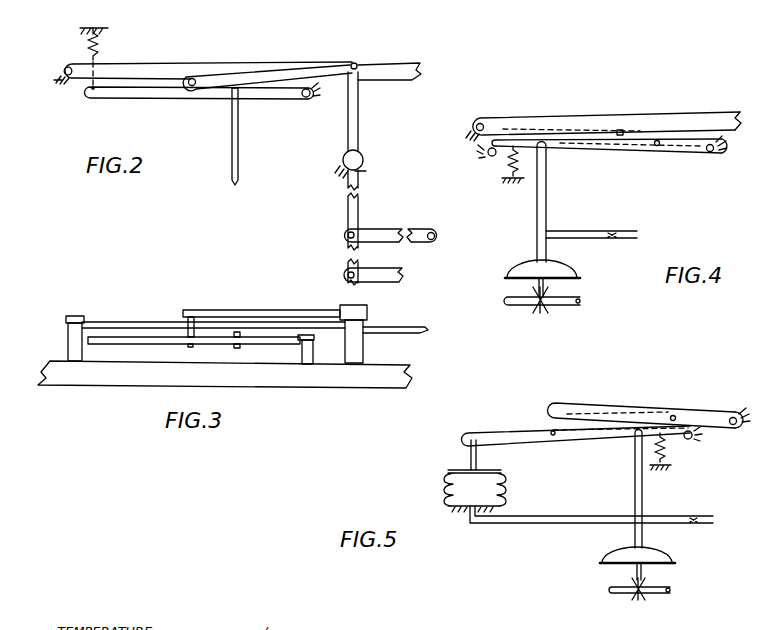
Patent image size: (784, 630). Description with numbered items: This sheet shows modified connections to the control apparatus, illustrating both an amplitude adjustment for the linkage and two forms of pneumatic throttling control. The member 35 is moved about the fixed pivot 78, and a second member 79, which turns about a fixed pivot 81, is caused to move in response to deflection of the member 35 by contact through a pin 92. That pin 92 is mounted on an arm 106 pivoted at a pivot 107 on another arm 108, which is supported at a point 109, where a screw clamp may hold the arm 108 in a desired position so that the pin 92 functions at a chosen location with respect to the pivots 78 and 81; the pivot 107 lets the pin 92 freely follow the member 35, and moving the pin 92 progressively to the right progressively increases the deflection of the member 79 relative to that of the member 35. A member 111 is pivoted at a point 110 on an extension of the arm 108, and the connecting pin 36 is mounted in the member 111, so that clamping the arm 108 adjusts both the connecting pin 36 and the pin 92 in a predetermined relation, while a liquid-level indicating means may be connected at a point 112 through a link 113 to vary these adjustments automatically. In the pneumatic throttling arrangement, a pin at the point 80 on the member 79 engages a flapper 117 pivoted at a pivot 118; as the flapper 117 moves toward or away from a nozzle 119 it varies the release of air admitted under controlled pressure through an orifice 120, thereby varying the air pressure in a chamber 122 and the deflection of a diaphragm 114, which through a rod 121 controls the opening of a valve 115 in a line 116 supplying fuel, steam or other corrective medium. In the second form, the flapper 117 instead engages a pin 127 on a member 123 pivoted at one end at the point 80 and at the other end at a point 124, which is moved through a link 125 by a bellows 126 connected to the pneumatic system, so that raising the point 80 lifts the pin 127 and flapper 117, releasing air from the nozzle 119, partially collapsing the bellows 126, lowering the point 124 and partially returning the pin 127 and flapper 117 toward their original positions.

In FIG. 2, the member 35 is at (382, 64).
In FIG. 3, the member 35 is at (386, 330).
In FIG. 4, the member 35 is at (706, 115).
In FIG. 2, the connecting pin 36 is at (432, 232).
In FIG. 2, the fixed pivot 78 is at (68, 66).
In FIG. 3, the fixed pivot 78 is at (80, 318).
In FIG. 4, the fixed pivot 78 is at (484, 122).
In FIG. 2, the member 79 is at (250, 98).
In FIG. 3, the member 79 is at (118, 344).
In FIG. 4, the member 79 is at (696, 153).
In FIG. 5, the member 79 is at (582, 406).
In FIG. 2, the point 80 is at (232, 92).
In FIG. 3, the point 80 is at (241, 346).
In FIG. 4, the point 80 is at (650, 148).
In FIG. 5, the point 80 is at (676, 414).
In FIG. 2, the fixed pivot 81 is at (309, 97).
In FIG. 3, the fixed pivot 81 is at (314, 346).
In FIG. 4, the fixed pivot 81 is at (716, 152).
In FIG. 5, the fixed pivot 81 is at (737, 413).
In FIG. 2, the pin 92 is at (196, 78).
In FIG. 3, the pin 92 is at (193, 347).
In FIG. 4, the pin 92 is at (621, 130).
In FIG. 2, the arm 106 is at (291, 72).
In FIG. 3, the arm 106 is at (216, 312).
In FIG. 2, the pivot 107 is at (356, 62).
In FIG. 2, the arm 108 is at (358, 128).
In FIG. 2, the point 109 is at (363, 160).
In FIG. 3, the point 109 is at (366, 311).
In FIG. 2, the point 110 is at (347, 237).
In FIG. 2, the member 111 is at (372, 237).
In FIG. 2, the point 112 is at (347, 276).
In FIG. 2, the link 113 is at (370, 273).
In FIG. 4, the diaphragm 114 is at (563, 281).
In FIG. 5, the diaphragm 114 is at (658, 566).
In FIG. 4, the valve 115 is at (541, 313).
In FIG. 5, the valve 115 is at (641, 600).
In FIG. 4, the line 116 is at (582, 303).
In FIG. 5, the line 116 is at (672, 591).
In FIG. 4, the flapper 117 is at (655, 146).
In FIG. 5, the flapper 117 is at (670, 434).
In FIG. 4, the pivot 118 is at (487, 152).
In FIG. 5, the pivot 118 is at (698, 438).
In FIG. 4, the nozzle 119 is at (547, 153).
In FIG. 5, the nozzle 119 is at (635, 438).
In FIG. 4, the orifice 120 is at (613, 232).
In FIG. 5, the orifice 120 is at (697, 517).
In FIG. 4, the rod 121 is at (546, 250).
In FIG. 5, the rod 121 is at (632, 532).
In FIG. 4, the chamber 122 is at (565, 274).
In FIG. 5, the chamber 122 is at (655, 556).
In FIG. 5, the member 123 is at (514, 432).
In FIG. 5, the point 124 is at (480, 438).
In FIG. 5, the link 125 is at (477, 460).
In FIG. 5, the bellows 126 is at (500, 488).
In FIG. 5, the pin 127 is at (554, 436).